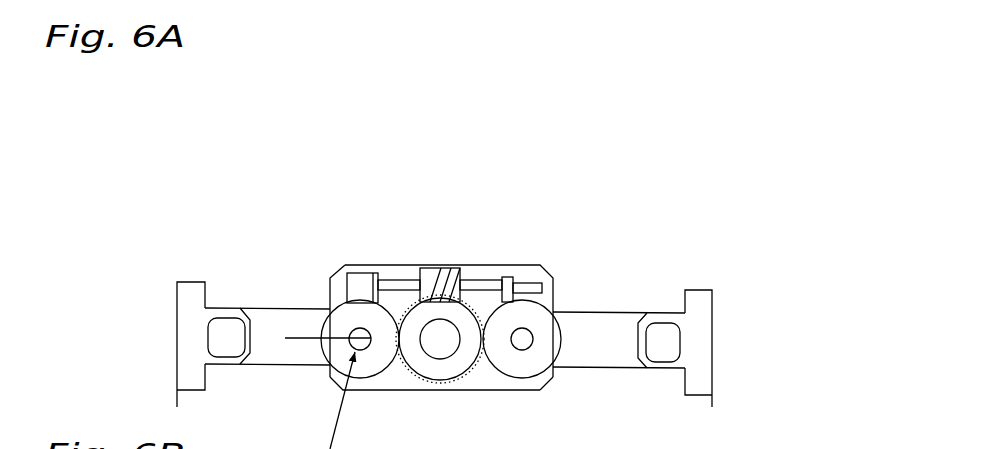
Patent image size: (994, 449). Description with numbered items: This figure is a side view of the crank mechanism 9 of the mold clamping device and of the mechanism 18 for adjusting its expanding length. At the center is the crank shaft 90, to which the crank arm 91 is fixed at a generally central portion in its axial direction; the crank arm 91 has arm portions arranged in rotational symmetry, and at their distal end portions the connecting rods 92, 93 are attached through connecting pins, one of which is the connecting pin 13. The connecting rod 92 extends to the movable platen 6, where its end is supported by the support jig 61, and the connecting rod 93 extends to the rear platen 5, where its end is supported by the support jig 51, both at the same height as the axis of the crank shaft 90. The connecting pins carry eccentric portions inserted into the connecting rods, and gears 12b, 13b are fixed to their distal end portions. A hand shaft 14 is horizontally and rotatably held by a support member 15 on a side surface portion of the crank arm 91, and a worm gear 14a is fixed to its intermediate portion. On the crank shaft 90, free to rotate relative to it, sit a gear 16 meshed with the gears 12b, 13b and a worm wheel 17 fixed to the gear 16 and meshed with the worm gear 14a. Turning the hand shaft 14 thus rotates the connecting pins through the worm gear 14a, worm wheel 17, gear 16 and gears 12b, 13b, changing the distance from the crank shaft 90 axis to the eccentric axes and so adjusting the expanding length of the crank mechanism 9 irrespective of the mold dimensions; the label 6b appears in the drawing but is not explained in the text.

The rear platen 5 is at (740, 348).
The movable platen 6 is at (173, 357).
The shaft gear 6b is at (285, 338).
The crank mechanism 9 is at (447, 235).
The gear 12b is at (370, 283).
The connecting pin 13 is at (535, 334).
The gear 13b is at (612, 408).
The hand shaft 14 is at (485, 278).
The worm gear 14a is at (430, 264).
The support member 15 is at (343, 268).
The gear 16 is at (481, 317).
The worm wheel 17 is at (478, 368).
The mechanism for adjusting the expanding length 18 is at (452, 268).
The support jig 51 is at (692, 313).
The support jig 61 is at (188, 280).
The crank shaft 90 is at (438, 360).
The crank arm 91 is at (330, 272).
The connecting rod 92 is at (267, 307).
The connecting rod 93 is at (620, 372).